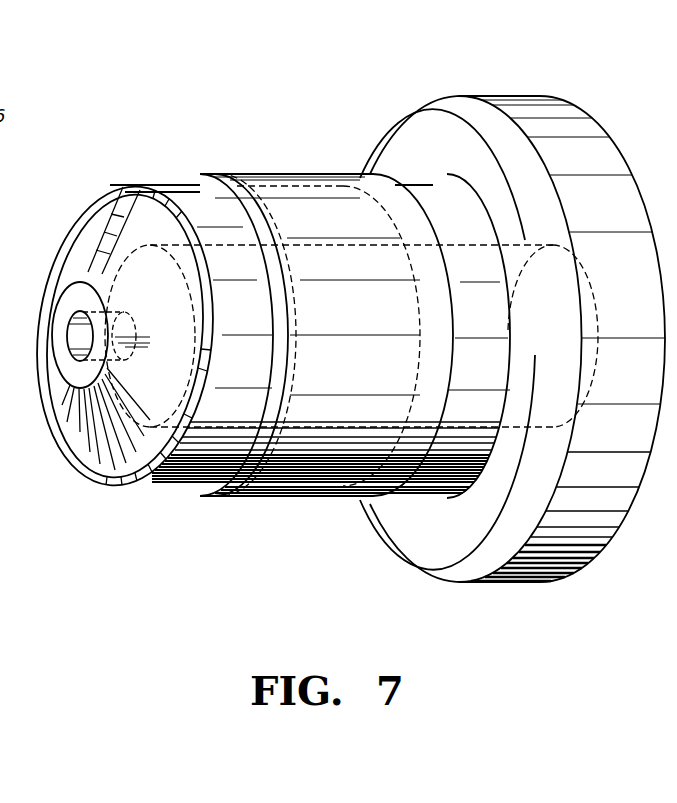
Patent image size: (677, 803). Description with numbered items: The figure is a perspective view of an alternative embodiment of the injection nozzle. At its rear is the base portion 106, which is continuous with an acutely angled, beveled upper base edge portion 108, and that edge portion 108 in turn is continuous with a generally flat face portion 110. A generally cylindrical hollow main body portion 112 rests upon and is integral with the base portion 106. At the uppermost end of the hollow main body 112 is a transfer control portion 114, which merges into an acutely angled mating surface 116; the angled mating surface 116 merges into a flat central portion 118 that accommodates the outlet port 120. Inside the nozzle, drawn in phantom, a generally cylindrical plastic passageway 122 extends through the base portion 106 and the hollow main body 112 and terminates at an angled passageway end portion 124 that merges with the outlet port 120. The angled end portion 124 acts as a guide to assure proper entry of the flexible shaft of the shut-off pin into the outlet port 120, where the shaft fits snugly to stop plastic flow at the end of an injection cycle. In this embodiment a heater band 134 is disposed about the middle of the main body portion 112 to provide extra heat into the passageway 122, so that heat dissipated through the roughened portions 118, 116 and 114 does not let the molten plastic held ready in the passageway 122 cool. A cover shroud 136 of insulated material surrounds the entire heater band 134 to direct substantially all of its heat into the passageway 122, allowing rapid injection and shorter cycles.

The base portion 106 is at (568, 130).
The beveled upper base edge portion 108 is at (455, 106).
The flat face portion 110 is at (428, 130).
The hollow main body portion 112 is at (413, 184).
The transfer control portion 114 is at (150, 200).
The angled mating surface 116 is at (121, 187).
The flat central portion 118 is at (90, 373).
The outlet port 120 is at (76, 311).
The plastic passageway 122 is at (217, 243).
The angled passageway end portion 124 is at (133, 408).
The heater band 134 is at (317, 186).
The cover shroud 136 is at (265, 174).